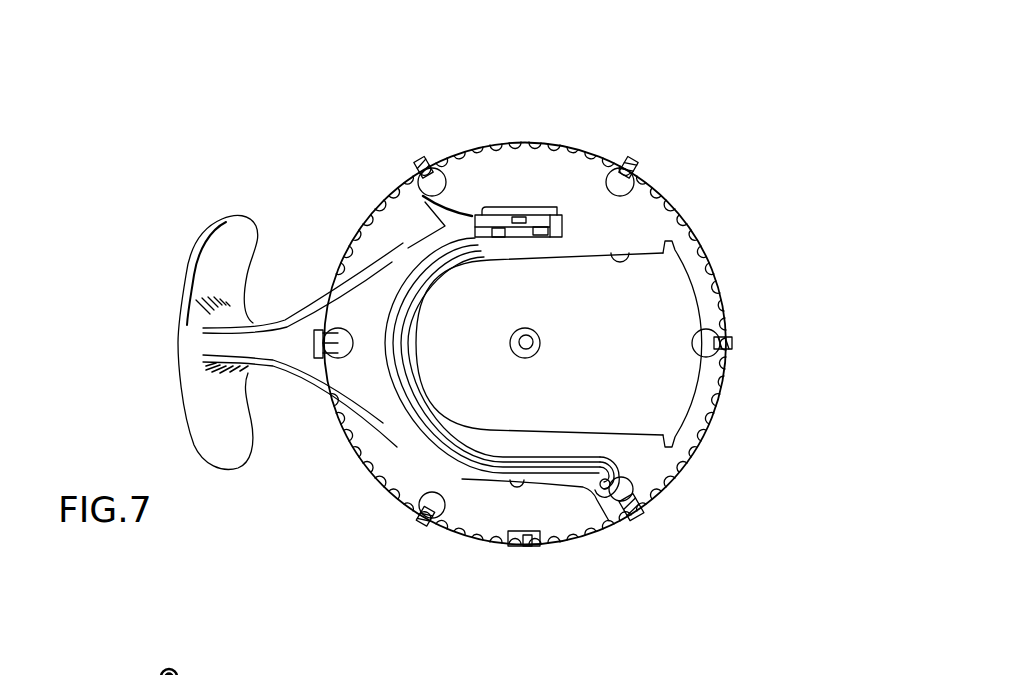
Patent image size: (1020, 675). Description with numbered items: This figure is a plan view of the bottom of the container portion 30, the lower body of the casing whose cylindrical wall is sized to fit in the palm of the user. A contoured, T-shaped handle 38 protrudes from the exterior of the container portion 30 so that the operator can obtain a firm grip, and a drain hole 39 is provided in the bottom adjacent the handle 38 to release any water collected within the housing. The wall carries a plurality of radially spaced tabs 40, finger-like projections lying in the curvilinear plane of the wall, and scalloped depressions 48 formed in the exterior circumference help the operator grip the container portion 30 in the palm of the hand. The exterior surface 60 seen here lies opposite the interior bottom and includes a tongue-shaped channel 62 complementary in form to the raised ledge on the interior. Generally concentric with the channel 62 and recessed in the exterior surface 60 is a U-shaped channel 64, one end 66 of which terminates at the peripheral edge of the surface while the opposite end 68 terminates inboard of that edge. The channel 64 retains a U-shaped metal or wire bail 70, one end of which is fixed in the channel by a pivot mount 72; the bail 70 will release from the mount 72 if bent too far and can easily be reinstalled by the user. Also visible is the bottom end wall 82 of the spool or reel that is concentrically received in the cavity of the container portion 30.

The container portion 30 is at (702, 240).
The handle 38 is at (190, 341).
The drain hole 39 is at (316, 355).
The tabs 40 is at (728, 343).
The scalloped depressions 48 is at (588, 528).
The exterior surface 60 is at (530, 162).
The tongue-shaped channel 62 is at (636, 253).
The U-shaped channel 64 is at (525, 483).
The end of U-shaped channel 66 is at (622, 482).
The opposite end of U-shaped channel 68 is at (547, 207).
The bail 70 is at (472, 238).
The pivot mount 72 is at (518, 217).
The bottom end wall 82 is at (630, 256).